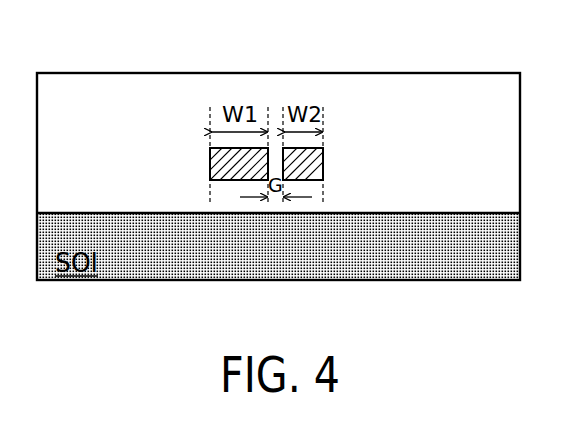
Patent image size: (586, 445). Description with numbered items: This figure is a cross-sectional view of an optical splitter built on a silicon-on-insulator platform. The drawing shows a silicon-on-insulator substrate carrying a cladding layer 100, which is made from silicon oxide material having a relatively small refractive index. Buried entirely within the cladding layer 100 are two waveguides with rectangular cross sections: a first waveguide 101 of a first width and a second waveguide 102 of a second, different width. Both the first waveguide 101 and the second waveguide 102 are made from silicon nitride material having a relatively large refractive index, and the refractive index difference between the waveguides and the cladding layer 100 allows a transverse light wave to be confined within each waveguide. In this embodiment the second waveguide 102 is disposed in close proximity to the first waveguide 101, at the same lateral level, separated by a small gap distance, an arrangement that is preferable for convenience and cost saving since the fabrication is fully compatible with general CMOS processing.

The cladding layer 100 is at (102, 202).
The first waveguide 101 is at (210, 168).
The second waveguide 102 is at (323, 166).